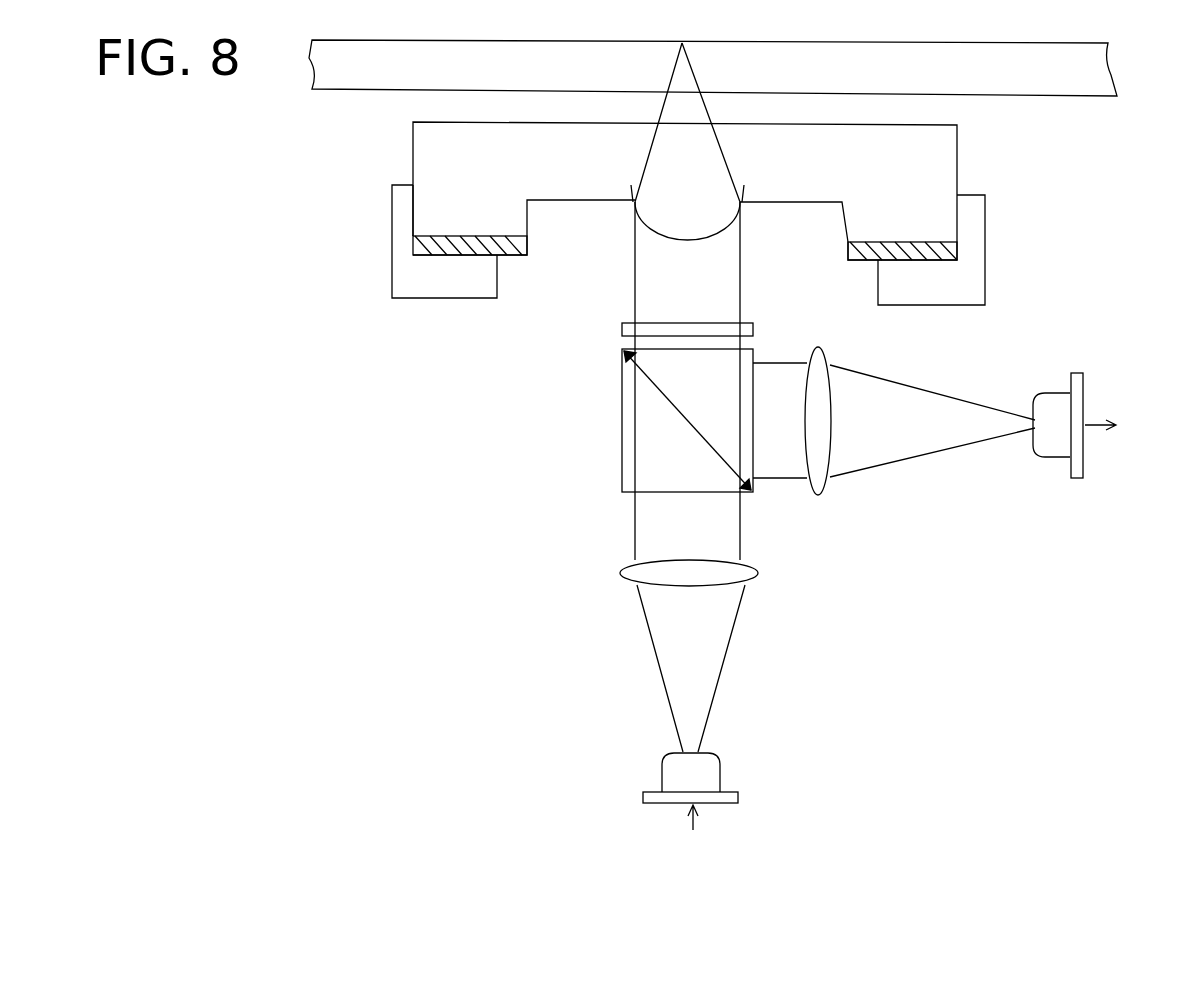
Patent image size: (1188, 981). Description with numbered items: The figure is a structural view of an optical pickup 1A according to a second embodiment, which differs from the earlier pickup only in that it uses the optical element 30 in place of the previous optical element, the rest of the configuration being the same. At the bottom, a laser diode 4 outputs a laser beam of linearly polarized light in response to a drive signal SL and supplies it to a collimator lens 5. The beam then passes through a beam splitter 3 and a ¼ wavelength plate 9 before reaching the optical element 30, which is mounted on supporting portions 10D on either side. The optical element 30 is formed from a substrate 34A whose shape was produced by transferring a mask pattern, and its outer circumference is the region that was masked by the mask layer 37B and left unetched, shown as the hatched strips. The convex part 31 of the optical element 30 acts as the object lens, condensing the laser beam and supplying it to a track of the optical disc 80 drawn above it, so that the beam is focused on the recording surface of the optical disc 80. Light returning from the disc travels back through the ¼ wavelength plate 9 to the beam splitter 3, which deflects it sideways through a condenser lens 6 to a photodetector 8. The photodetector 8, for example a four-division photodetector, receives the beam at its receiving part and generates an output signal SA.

The optical disc 80 is at (355, 89).
The optical element 30 is at (962, 187).
The substrate 34A is at (413, 210).
The mask layer 37B is at (413, 247).
The convex part 31 is at (668, 238).
The substrate 10D is at (447, 298).
The ¼ wavelength plate 9 is at (622, 327).
The beam splitter 3 is at (622, 372).
The condenser lens 6 is at (818, 495).
The photodetector 8 is at (1077, 478).
The output signal SA is at (1121, 427).
The collimator lens 5 is at (620, 574).
The laser diode 4 is at (643, 797).
The drive signal SL is at (691, 835).
The optical pickup 1A is at (1144, 322).